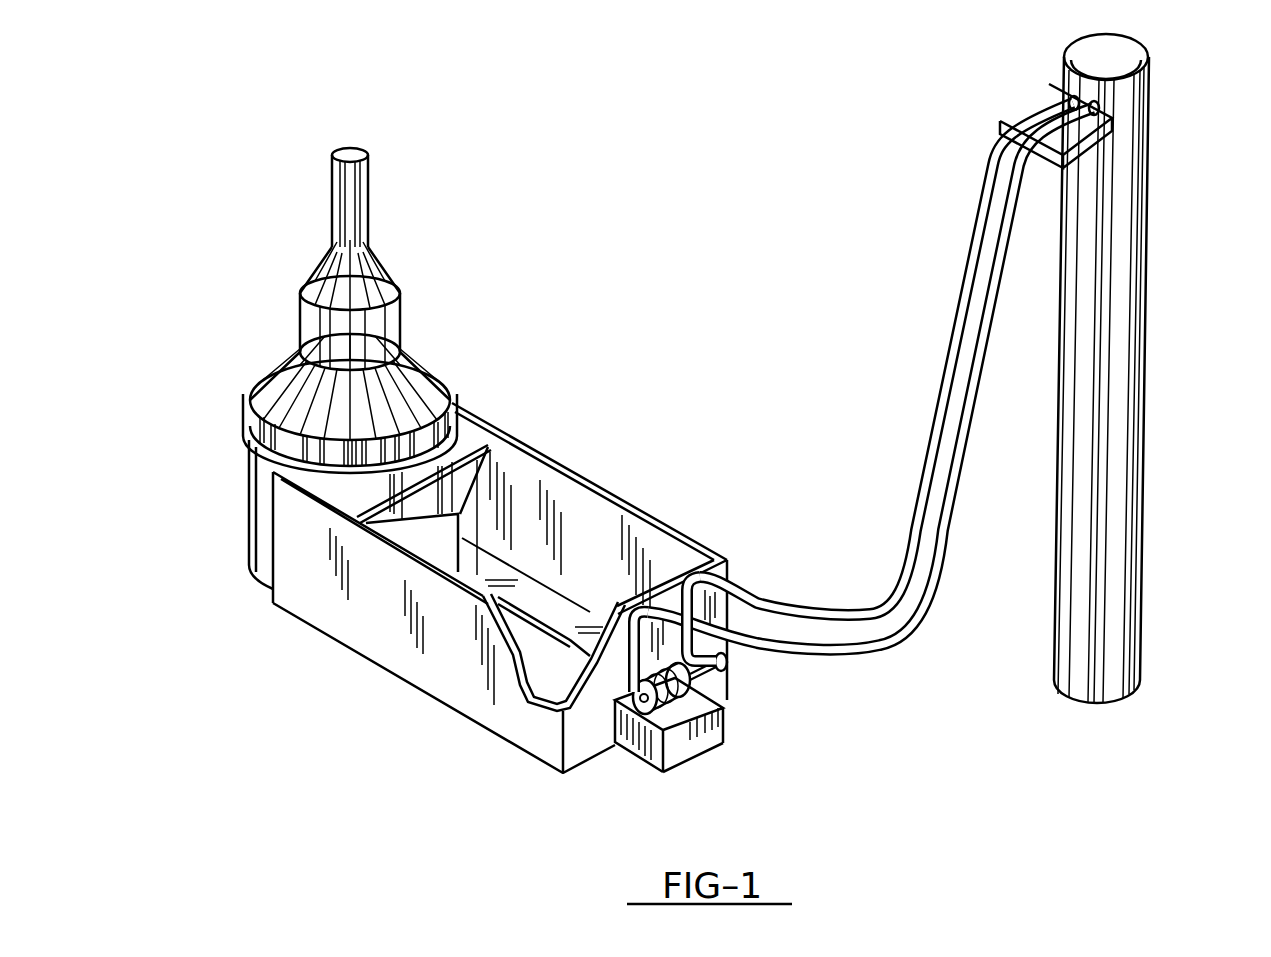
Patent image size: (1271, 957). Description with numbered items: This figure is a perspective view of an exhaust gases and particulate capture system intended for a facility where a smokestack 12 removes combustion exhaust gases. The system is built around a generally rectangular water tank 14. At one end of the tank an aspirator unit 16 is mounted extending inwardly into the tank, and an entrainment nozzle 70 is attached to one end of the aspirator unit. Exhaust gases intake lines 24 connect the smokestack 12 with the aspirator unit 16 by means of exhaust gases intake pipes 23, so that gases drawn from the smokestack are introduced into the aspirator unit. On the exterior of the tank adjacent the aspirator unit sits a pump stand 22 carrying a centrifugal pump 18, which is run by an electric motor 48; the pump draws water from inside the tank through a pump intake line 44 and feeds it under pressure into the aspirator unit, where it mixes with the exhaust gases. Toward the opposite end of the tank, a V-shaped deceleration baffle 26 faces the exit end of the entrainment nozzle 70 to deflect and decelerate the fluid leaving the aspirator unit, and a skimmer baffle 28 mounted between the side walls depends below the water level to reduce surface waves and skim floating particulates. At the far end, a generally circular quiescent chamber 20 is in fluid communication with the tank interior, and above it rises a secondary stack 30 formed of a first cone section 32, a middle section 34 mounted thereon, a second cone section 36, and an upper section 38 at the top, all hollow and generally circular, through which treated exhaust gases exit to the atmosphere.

The smokestack 12 is at (1122, 250).
The water tank 14 is at (408, 638).
The aspirator unit 16 is at (572, 624).
The centrifugal pump 18 is at (725, 700).
The quiescent chamber 20 is at (262, 530).
The pump stand 22 is at (685, 748).
The exhaust gases intake pipes 23 is at (745, 605).
The exhaust gases intake lines 24 is at (966, 282).
The deceleration baffle 26 is at (451, 549).
The skimmer baffle 28 is at (480, 445).
The secondary stack 30 is at (152, 306).
The first cone section 32 is at (272, 383).
The middle section 34 is at (385, 330).
The second cone section 36 is at (385, 273).
The upper section 38 is at (367, 193).
The pump intake line 44 is at (737, 661).
The electric motor 48 is at (645, 760).
The entrainment nozzle 70 is at (530, 622).